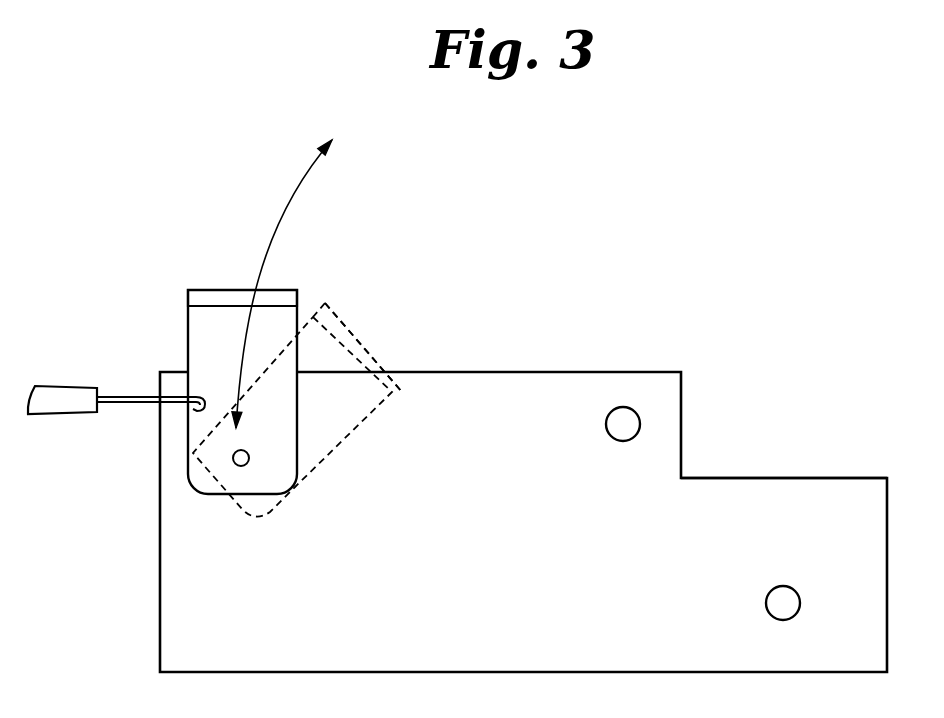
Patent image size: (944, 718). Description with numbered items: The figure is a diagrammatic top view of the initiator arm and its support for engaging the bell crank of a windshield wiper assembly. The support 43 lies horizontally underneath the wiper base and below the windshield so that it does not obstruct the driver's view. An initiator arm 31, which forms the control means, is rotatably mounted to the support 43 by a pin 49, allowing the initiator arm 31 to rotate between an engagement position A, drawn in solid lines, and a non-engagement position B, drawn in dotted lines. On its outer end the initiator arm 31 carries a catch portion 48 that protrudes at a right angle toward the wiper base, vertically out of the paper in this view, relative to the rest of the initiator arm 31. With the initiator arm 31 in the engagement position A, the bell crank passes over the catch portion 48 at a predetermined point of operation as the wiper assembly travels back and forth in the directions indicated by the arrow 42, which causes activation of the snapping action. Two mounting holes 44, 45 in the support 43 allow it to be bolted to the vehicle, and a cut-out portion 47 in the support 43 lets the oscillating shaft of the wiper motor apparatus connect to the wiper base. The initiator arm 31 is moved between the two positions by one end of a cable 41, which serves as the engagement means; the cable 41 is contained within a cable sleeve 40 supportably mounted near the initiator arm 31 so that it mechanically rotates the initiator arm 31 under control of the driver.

The initiator arm 31 is at (297, 292).
The cable sleeve 40 is at (62, 413).
The cable 41 is at (127, 405).
The arrow 42 is at (305, 182).
The support 43 is at (560, 384).
The mounting hole 44 is at (640, 419).
The mounting hole 45 is at (782, 585).
The cut-out portion 47 is at (736, 477).
The catch portion 48 is at (187, 300).
The pin 49 is at (233, 462).